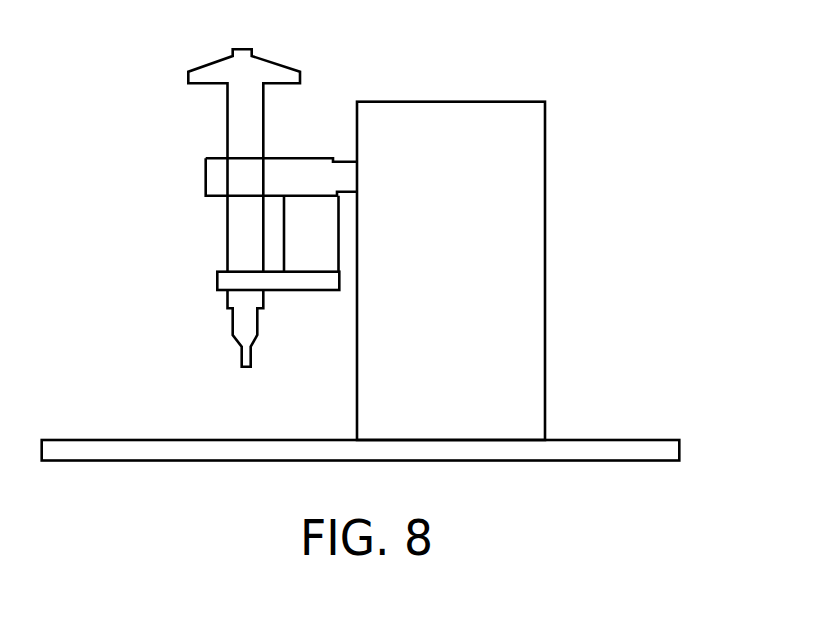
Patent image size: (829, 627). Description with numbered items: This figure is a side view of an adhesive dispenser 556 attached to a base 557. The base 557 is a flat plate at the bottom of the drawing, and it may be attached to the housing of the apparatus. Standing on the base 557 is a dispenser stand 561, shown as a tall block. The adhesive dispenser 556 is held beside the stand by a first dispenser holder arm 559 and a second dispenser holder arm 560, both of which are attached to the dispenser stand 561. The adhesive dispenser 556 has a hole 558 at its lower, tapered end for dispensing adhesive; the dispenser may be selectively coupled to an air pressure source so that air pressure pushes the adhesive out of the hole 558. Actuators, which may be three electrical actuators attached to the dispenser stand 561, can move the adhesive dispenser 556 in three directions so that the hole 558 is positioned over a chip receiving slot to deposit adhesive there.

The adhesive dispenser 556 is at (228, 140).
The base 557 is at (267, 462).
The hole 558 is at (243, 370).
The first dispenser holder arm 559 is at (292, 155).
The second dispenser holder arm 560 is at (293, 292).
The dispenser stand 561 is at (412, 102).